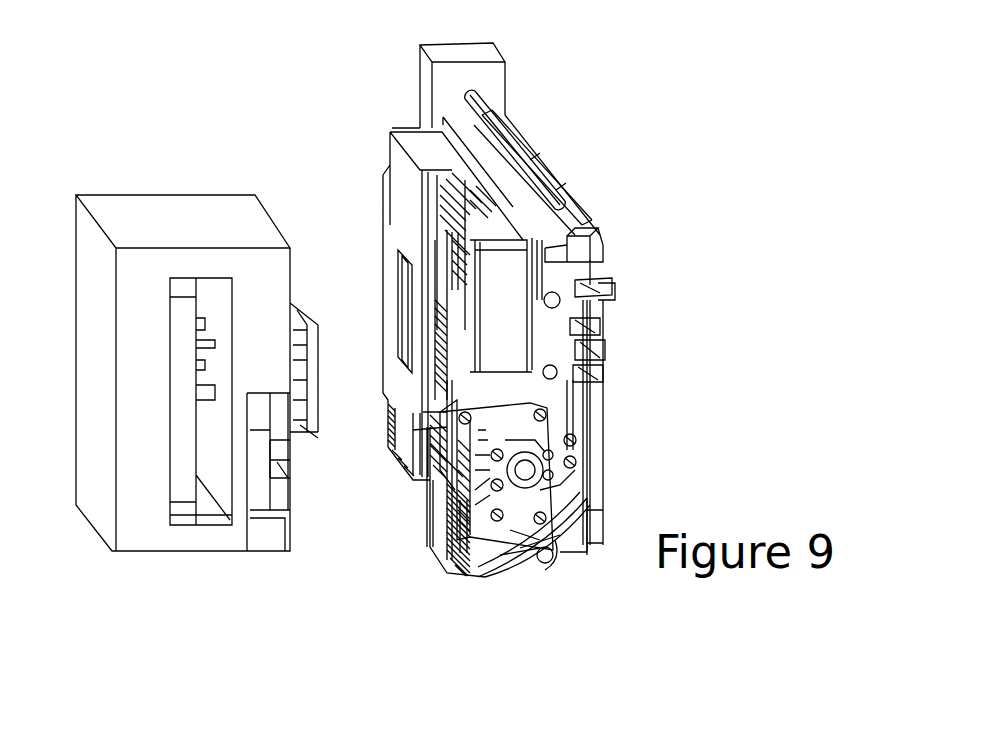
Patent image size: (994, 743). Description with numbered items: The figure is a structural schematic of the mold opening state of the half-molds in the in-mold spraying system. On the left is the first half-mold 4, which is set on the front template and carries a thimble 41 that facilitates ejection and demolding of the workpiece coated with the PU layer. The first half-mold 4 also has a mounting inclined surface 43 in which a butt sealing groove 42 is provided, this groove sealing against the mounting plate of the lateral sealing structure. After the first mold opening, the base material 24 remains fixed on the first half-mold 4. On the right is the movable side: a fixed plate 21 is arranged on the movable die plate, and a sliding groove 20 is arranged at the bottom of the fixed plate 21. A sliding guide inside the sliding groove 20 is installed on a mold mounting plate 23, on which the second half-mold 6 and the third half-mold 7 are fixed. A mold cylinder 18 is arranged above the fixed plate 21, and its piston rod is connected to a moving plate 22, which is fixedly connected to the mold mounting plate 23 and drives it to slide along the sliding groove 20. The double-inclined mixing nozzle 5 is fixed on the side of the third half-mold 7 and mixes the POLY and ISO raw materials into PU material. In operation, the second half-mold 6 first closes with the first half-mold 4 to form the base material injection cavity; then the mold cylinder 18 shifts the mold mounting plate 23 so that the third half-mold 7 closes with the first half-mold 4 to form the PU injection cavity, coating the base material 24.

The first half-mold 4 is at (194, 302).
The thimble 41 is at (248, 330).
The butt sealing groove 42 is at (309, 501).
The mounting inclined surface 43 is at (227, 506).
The base material 24 is at (334, 412).
The second half-mold 6 is at (536, 310).
The moving plate 22 is at (586, 113).
The mold cylinder 18 is at (592, 167).
The fixed plate 21 is at (622, 239).
The sliding groove 20 is at (641, 290).
The third half-mold 7 is at (577, 308).
The mold mounting plate 23 is at (568, 470).
The double-inclined mixing nozzle 5 is at (580, 505).